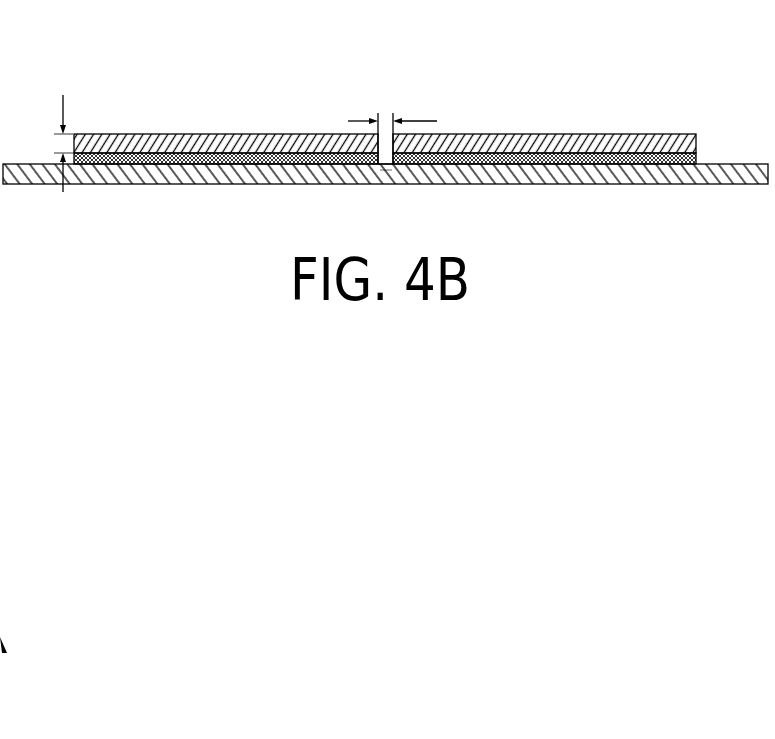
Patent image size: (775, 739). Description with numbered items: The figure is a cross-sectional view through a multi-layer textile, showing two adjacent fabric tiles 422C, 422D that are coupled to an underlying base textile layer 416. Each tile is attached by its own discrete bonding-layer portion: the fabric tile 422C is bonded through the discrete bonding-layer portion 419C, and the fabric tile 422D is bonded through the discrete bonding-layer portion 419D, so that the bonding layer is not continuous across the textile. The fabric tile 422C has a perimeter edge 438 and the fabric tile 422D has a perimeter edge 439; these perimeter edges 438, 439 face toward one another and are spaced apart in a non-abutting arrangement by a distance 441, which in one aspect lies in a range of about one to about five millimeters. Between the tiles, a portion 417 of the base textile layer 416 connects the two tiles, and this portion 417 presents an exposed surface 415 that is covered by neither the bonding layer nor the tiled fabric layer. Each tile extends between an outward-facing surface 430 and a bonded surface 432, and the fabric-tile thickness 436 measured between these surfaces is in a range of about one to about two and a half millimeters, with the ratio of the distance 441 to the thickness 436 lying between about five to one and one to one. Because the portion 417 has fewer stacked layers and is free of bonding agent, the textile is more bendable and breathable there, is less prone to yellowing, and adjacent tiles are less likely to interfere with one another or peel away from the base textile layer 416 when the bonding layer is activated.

The exposed surface 415 is at (384, 160).
The base textile layer 416 is at (722, 164).
The portion of the base textile layer 417 is at (390, 170).
The discrete bonding-layer portion 419C is at (183, 160).
The discrete bonding-layer portion 419D is at (547, 160).
The fabric tile 422C is at (253, 147).
The fabric tile 422D is at (493, 133).
The outward-facing surface 430 is at (385, 85).
The bonded surface 432 is at (385, 165).
The fabric-tile thickness 436 is at (65, 131).
The perimeter edge 438 is at (378, 148).
The perimeter edge 439 is at (393, 148).
The distance 441 is at (415, 120).